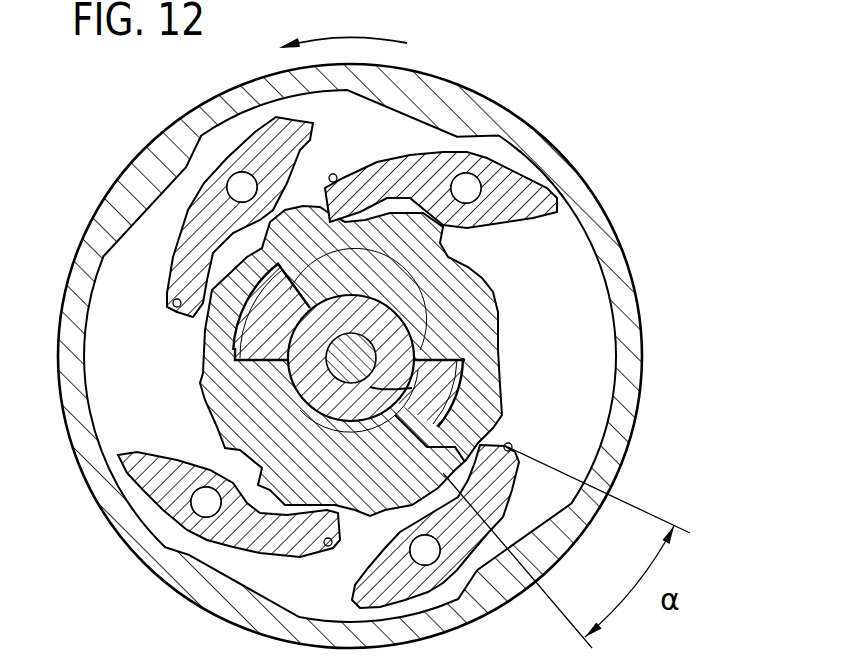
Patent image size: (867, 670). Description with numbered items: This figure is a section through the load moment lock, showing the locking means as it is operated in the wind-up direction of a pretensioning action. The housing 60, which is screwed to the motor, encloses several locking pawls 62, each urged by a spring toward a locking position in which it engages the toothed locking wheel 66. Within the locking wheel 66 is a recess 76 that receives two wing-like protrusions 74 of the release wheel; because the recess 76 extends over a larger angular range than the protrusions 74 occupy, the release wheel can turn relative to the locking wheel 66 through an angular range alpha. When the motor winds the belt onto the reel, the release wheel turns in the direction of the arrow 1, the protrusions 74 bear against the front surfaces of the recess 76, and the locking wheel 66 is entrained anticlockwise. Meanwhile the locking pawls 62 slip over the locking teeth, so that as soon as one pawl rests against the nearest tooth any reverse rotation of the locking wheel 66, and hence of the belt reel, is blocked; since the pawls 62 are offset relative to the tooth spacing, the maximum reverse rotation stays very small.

The arrow 1 is at (397, 42).
The housing 60 is at (460, 104).
The locking pawls 62 is at (197, 217).
The locking wheel 66 is at (470, 303).
The wing-like protrusions 74 is at (295, 328).
The recess 76 is at (437, 432).